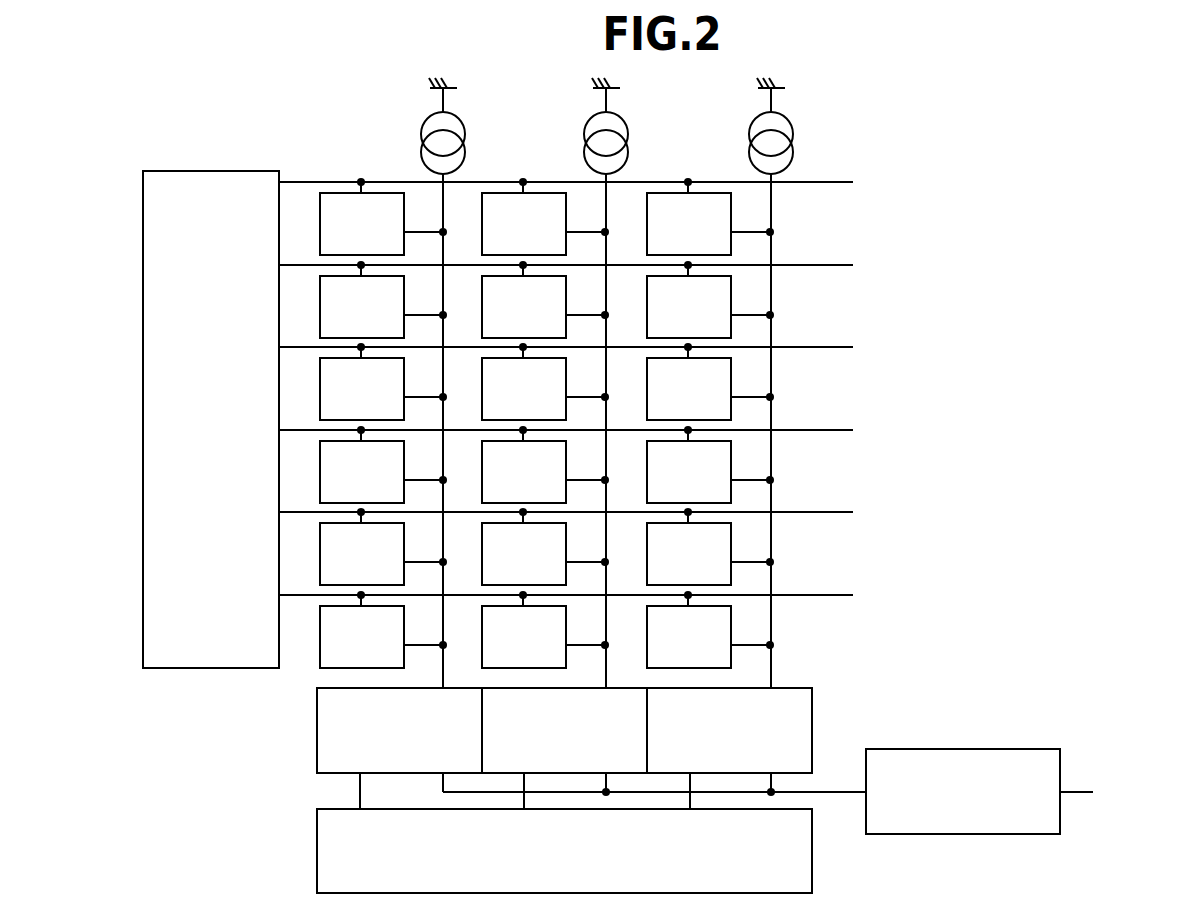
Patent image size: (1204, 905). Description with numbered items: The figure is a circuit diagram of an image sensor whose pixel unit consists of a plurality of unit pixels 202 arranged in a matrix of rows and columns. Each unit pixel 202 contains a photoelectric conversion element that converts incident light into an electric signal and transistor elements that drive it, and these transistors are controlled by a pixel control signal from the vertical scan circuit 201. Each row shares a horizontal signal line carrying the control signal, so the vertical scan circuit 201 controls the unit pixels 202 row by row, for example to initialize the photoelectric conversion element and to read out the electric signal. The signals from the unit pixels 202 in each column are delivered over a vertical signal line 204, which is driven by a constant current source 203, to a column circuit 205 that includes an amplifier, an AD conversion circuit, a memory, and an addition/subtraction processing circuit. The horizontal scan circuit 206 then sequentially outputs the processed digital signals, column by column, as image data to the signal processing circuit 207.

The vertical scan circuit 201 is at (212, 171).
The unit pixel 202 is at (337, 192).
The constant current source 203 is at (432, 126).
The vertical signal line 204 is at (772, 205).
The column circuit 205 is at (317, 733).
The horizontal scan circuit 206 is at (317, 851).
The signal processing circuit 207 is at (963, 749).